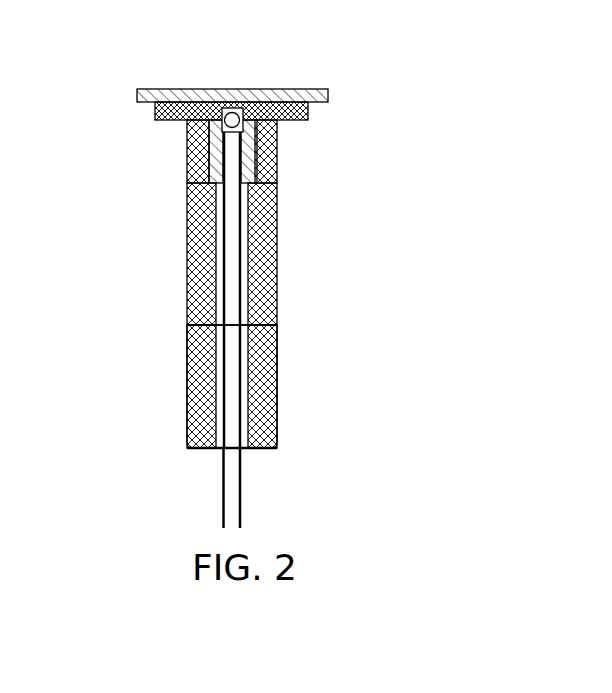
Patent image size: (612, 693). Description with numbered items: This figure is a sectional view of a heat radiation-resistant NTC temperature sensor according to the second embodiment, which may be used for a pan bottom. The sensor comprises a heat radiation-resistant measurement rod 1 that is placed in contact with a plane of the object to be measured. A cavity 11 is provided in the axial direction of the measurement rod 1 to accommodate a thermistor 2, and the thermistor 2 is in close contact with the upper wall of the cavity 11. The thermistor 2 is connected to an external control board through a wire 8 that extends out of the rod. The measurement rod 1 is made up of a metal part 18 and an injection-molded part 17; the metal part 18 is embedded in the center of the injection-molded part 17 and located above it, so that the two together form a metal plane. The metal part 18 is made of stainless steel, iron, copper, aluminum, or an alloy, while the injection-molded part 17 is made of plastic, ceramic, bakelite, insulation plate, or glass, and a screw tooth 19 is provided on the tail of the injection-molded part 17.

The heat radiation-resistant measurement rod 1 is at (283, 90).
The thermistor 2 is at (329, 98).
The cavity 11 is at (280, 188).
The injection-molded part 17 is at (277, 280).
The metal part 18 is at (228, 95).
The screw tooth 19 is at (277, 413).
The wire 8 is at (243, 485).